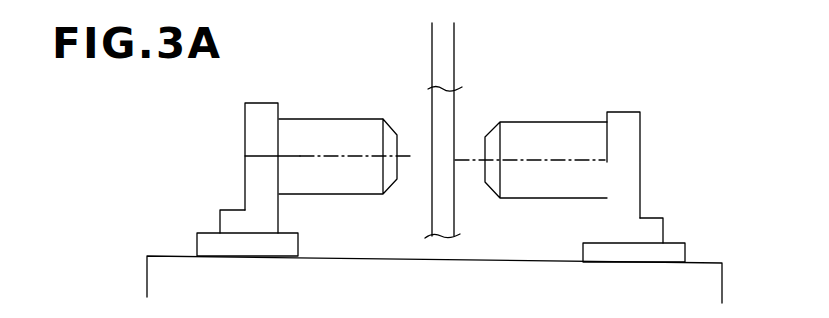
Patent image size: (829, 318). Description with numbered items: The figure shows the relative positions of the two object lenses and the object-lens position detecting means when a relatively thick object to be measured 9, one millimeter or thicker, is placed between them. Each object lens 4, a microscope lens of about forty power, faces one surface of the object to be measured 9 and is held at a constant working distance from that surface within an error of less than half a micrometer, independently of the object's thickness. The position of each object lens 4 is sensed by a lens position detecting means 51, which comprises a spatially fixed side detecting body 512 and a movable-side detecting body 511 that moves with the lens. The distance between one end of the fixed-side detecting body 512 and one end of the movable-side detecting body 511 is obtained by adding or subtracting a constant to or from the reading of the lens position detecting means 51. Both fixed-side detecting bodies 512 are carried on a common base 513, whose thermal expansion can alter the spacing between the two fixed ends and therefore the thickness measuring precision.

The object lens 4 is at (338, 118).
The object to be measured 9 is at (432, 203).
The lens position detecting means 51 is at (279, 233).
The movable-side detecting body 511 is at (221, 210).
The fixed-side detecting body 512 is at (262, 250).
The base 513 is at (722, 270).